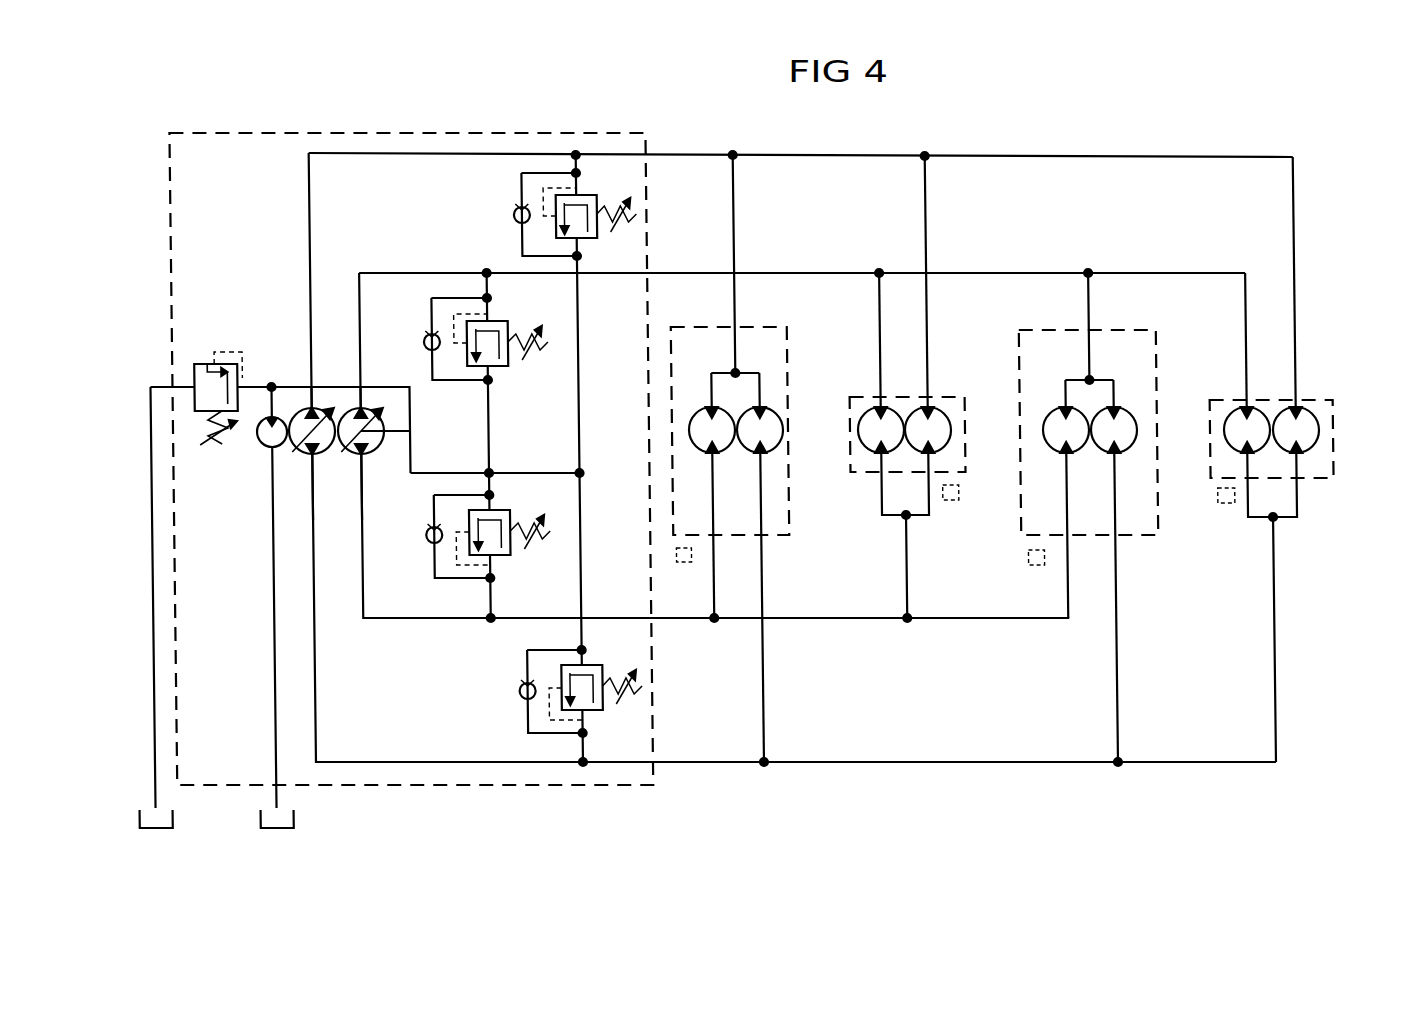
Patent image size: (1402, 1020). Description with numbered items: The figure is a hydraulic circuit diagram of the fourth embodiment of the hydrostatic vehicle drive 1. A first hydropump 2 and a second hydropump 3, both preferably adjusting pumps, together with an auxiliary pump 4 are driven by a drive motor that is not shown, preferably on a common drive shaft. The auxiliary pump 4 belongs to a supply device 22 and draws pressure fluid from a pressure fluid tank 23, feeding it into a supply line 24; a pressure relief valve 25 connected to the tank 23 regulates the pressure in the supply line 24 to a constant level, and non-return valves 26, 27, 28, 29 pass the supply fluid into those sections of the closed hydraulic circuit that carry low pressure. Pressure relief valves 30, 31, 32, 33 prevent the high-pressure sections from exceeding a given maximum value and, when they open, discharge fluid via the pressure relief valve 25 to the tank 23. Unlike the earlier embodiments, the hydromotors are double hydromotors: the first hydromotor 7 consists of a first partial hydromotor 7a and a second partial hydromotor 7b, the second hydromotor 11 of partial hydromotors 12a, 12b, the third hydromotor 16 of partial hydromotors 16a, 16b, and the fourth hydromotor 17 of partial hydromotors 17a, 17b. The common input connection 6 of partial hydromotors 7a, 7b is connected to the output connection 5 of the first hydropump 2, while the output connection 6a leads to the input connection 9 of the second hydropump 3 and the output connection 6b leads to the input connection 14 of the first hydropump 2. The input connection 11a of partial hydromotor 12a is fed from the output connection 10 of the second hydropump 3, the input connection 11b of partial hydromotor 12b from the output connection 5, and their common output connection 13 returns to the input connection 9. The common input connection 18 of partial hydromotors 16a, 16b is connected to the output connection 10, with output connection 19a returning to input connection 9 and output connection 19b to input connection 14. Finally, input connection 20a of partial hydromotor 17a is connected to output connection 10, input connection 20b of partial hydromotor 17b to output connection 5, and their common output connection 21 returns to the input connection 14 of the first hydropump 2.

The hydrostatic vehicle drive 1 is at (1042, 138).
The first hydropump 2 is at (322, 458).
The second hydropump 3 is at (345, 406).
The auxiliary pump 4 is at (268, 442).
The output connection of the first hydropump 5 is at (306, 404).
The common input connection 6 is at (740, 362).
The output connection of the first partial hydromotor 6a is at (715, 540).
The output connection of the second partial hydromotor 6b is at (762, 540).
The first hydromotor 7 is at (775, 490).
The first partial hydromotor 7a is at (698, 420).
The second partial hydromotor 7b is at (770, 430).
The input connection of the second hydropump 9 is at (368, 458).
The output connection of the second hydropump 10 is at (368, 406).
The second hydromotor 11 is at (860, 480).
The input connection of the first partial hydromotor 11a is at (886, 390).
The input connection of the second partial hydromotor 11b is at (933, 390).
The first partial hydromotor 12a is at (866, 420).
The second partial hydromotor 12b is at (940, 428).
The common output connection 13 is at (910, 520).
The input connection of the first hydropump 14 is at (306, 458).
The third hydromotor 16 is at (1145, 512).
The first partial hydromotor 16a is at (1054, 420).
The second partial hydromotor 16b is at (1125, 430).
The fourth hydromotor 17 is at (1316, 480).
The first partial hydromotor 17a is at (1234, 420).
The second partial hydromotor 17b is at (1310, 428).
The common input connection 18 is at (1095, 370).
The output connection of the first partial hydromotor 19a is at (1070, 540).
The output connection of the second partial hydromotor 19b is at (1118, 540).
The input connection of the first partial hydromotor 20a is at (1252, 392).
The input connection of the second partial hydromotor 20b is at (1300, 392).
The common output connection 21 is at (1276, 522).
The supply device 22 is at (258, 530).
The pressure fluid tank 23 is at (152, 832).
The supply line 24 is at (515, 471).
The pressure relief valve 25 is at (208, 362).
The non-return valve 26 is at (426, 338).
The non-return valve 27 is at (428, 543).
The non-return valve 28 is at (515, 215).
The non-return valve 29 is at (516, 692).
The pressure relief valve 30 is at (502, 360).
The pressure relief valve 31 is at (500, 552).
The pressure relief valve 32 is at (590, 194).
The pressure relief valve 33 is at (594, 712).